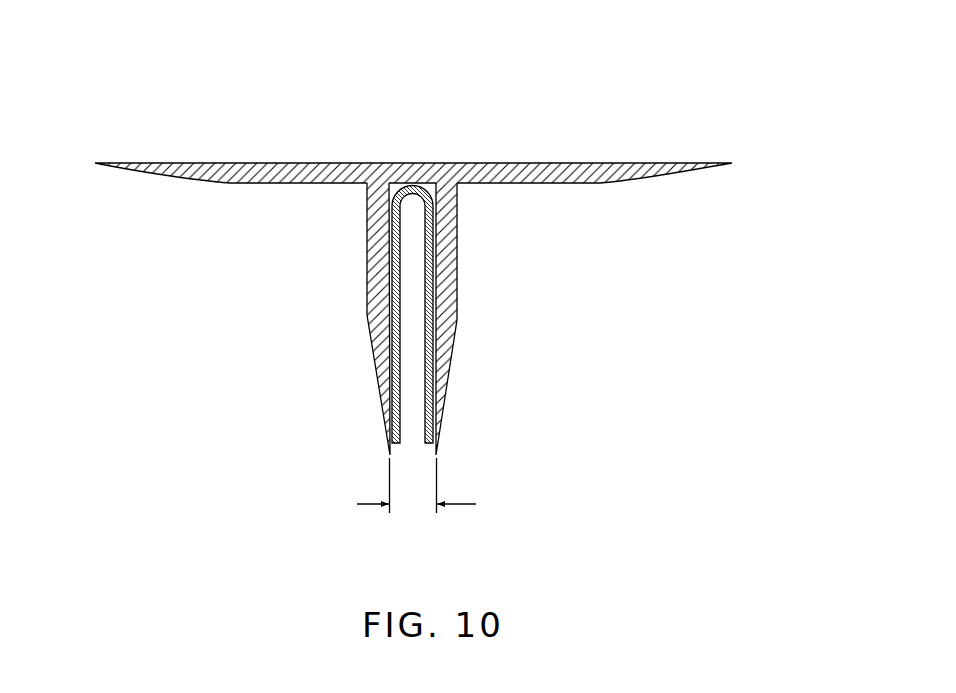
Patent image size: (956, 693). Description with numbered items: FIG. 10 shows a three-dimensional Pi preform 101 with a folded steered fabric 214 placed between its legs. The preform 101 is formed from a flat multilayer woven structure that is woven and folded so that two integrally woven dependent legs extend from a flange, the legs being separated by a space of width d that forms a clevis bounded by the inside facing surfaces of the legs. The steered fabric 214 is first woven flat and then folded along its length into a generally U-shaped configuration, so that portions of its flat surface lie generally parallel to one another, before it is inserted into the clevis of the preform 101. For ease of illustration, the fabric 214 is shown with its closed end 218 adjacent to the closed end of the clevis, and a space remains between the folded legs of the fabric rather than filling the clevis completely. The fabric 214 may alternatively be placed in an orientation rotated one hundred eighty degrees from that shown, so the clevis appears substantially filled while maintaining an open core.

The substrate 101 is at (444, 147).
The closed end 218 is at (413, 186).
The steered fabric 214 is at (415, 430).